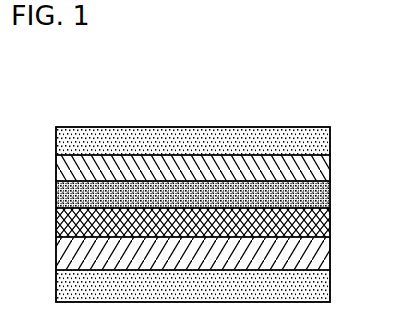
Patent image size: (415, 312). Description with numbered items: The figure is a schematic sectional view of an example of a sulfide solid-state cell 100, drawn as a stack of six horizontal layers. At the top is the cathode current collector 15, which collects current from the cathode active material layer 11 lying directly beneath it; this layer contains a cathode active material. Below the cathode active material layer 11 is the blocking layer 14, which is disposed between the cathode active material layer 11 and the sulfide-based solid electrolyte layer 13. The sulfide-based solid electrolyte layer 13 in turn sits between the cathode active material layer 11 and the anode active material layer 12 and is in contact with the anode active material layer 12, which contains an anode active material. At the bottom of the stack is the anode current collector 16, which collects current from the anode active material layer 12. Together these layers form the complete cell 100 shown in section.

The sulfide solid-state cell 100 is at (47, 103).
The cathode current collector 15 is at (331, 142).
The cathode active material layer 11 is at (331, 160).
The blocking layer 14 is at (331, 197).
The sulfide-based solid electrolyte layer 13 is at (331, 231).
The anode active material layer 12 is at (331, 266).
The anode current collector 16 is at (331, 293).